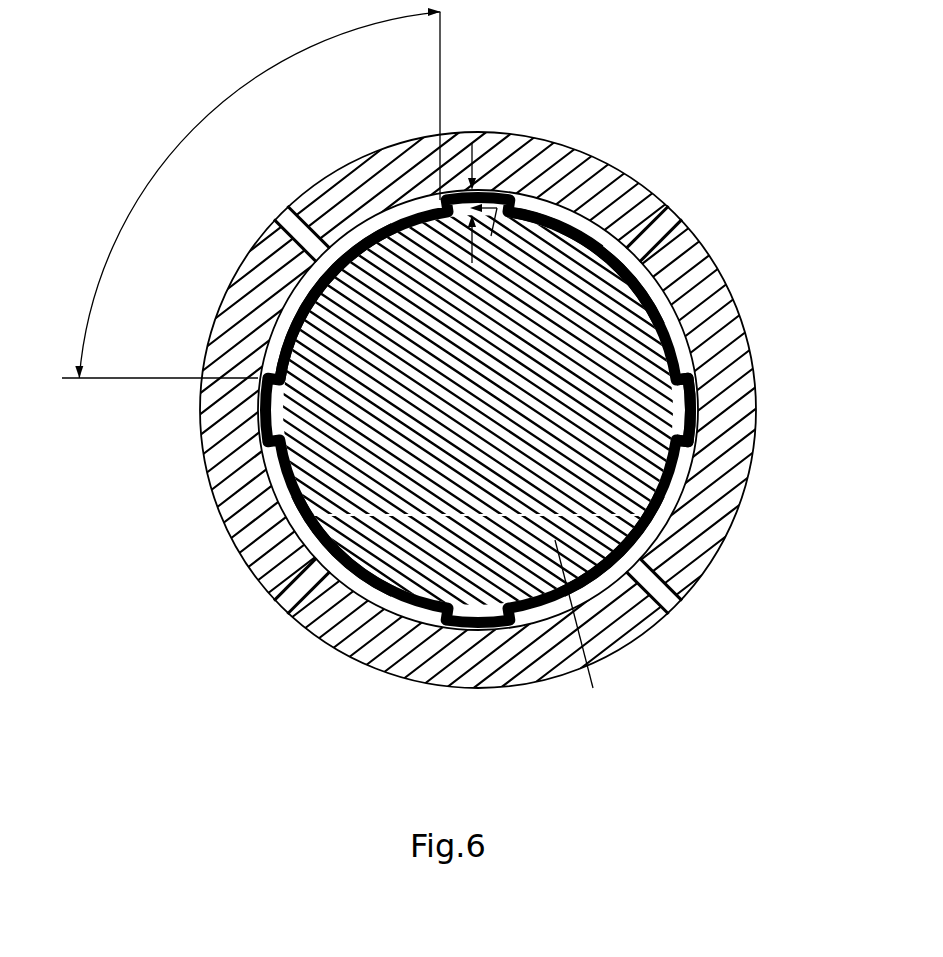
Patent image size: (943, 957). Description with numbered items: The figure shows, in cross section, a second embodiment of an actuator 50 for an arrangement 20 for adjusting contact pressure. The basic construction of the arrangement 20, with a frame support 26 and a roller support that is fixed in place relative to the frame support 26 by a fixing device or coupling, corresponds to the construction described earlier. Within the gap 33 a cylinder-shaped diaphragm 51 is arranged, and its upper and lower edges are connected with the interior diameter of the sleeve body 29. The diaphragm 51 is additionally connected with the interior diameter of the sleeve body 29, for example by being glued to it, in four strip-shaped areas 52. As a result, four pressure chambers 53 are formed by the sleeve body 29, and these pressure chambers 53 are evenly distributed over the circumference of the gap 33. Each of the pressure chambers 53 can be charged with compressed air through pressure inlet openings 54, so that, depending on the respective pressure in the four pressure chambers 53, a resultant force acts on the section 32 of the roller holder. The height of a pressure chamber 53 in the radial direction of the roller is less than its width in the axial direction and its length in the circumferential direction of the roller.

The arrangement 20 is at (678, 128).
The frame support 26 is at (703, 277).
The sleeve body 29 is at (722, 350).
The section 32 is at (427, 552).
The gap 33 is at (278, 485).
The actuator 50 is at (560, 215).
The diaphragm 51 is at (660, 505).
The strip-shaped areas 52 is at (700, 412).
The pressure chambers 53 is at (357, 237).
The pressure inlet openings 54 is at (288, 220).